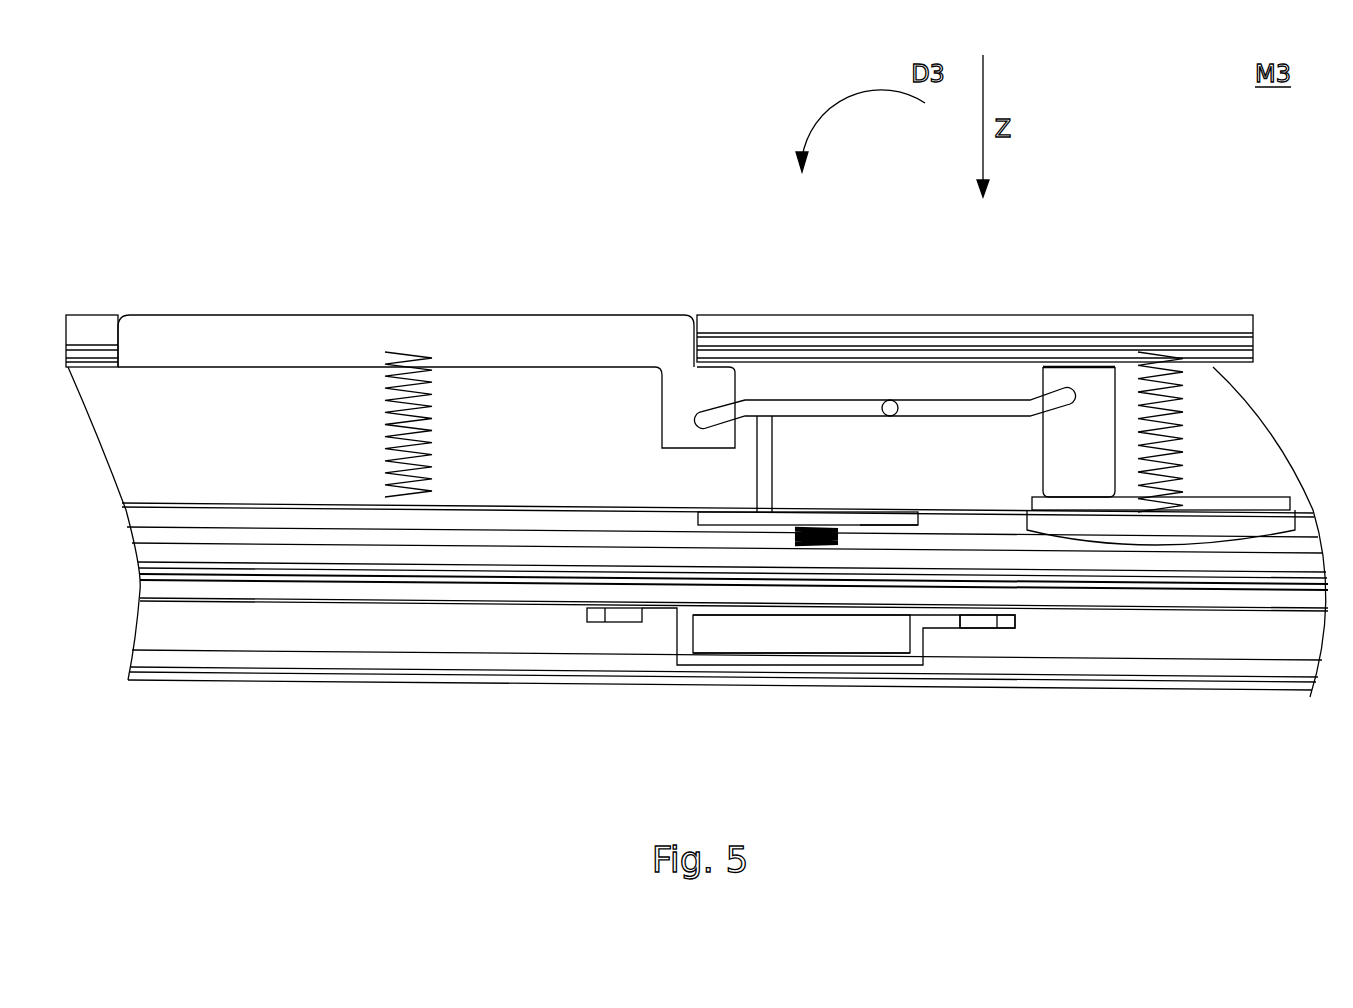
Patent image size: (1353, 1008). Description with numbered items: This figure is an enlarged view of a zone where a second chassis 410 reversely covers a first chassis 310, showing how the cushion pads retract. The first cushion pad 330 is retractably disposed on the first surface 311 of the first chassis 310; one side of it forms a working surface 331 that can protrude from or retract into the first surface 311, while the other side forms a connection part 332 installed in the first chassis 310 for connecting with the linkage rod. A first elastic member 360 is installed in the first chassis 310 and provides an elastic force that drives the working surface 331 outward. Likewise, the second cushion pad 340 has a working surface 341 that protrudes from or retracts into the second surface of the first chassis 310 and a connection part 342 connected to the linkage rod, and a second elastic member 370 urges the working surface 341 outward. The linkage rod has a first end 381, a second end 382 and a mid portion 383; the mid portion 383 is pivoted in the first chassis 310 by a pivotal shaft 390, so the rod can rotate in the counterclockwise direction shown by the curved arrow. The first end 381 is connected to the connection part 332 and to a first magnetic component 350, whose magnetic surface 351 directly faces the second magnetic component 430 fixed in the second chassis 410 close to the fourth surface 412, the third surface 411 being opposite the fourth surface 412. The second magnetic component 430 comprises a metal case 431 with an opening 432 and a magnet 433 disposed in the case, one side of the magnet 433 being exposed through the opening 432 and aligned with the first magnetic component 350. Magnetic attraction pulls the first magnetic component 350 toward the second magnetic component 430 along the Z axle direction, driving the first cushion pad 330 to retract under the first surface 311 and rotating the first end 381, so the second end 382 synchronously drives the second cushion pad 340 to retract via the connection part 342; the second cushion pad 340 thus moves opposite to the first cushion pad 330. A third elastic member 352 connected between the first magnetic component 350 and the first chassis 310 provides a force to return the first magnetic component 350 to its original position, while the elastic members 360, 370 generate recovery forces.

The first chassis 310 is at (289, 303).
The first surface 311 is at (88, 315).
The first cushion pad 330 is at (627, 301).
The working surface 331 is at (535, 315).
The connection part 332 is at (705, 385).
The second cushion pad 340 is at (1161, 373).
The working surface 341 is at (1240, 520).
The connection part 342 is at (1093, 383).
The first magnetic component 350 is at (684, 513).
The magnetic surface 351 is at (883, 530).
The third elastic member 352 is at (820, 545).
The first elastic member 360 is at (405, 490).
The second elastic member 370 is at (1157, 500).
The first end 381 is at (757, 407).
The second end 382 is at (1060, 383).
The mid portion 383 is at (965, 410).
The pivotal shaft 390 is at (889, 400).
The second chassis 410 is at (1063, 708).
The third surface 411 is at (185, 693).
The fourth surface 412 is at (1098, 568).
The second magnetic component 430 is at (707, 680).
The metal case 431 is at (977, 628).
The opening 432 is at (882, 605).
The magnet 433 is at (840, 633).